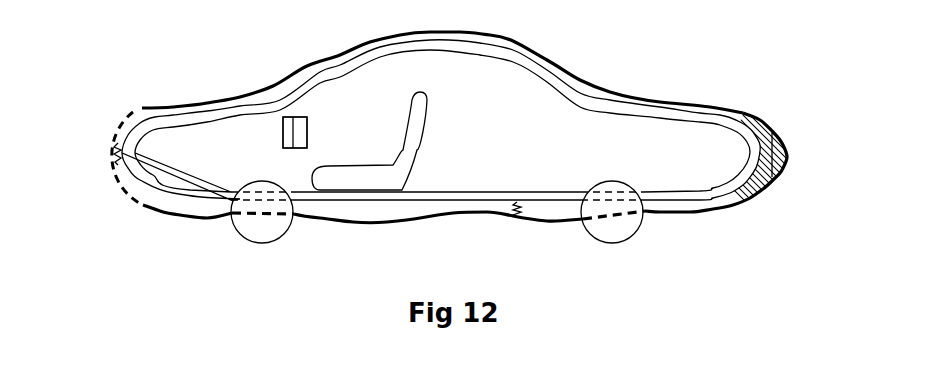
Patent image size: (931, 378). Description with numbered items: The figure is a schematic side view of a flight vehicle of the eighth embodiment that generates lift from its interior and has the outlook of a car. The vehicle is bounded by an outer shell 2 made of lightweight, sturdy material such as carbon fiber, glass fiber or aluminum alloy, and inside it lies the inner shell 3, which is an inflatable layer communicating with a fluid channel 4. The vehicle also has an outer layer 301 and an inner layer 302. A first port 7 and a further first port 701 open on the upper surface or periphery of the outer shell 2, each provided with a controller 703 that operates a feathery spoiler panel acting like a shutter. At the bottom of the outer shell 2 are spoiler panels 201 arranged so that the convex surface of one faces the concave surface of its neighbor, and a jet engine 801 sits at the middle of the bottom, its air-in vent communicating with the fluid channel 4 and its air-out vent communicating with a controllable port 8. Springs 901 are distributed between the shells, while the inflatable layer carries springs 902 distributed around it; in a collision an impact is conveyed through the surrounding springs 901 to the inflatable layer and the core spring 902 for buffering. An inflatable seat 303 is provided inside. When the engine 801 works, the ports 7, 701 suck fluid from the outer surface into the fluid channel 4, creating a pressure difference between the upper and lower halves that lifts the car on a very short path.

The outer shell 2 is at (345, 51).
The inner shell 3 is at (387, 47).
The fluid channel 4 is at (423, 40).
The inner layer 302 is at (483, 55).
The first port 7 is at (112, 152).
The outer layer 301 is at (133, 146).
The spring 901 is at (122, 150).
The spring 902 is at (138, 175).
The controller 703 is at (285, 122).
The first port 701 is at (283, 137).
The seat 303 is at (367, 182).
The spoiler panel 201 is at (547, 222).
The jet engine 801 is at (773, 132).
The port 8 is at (787, 150).